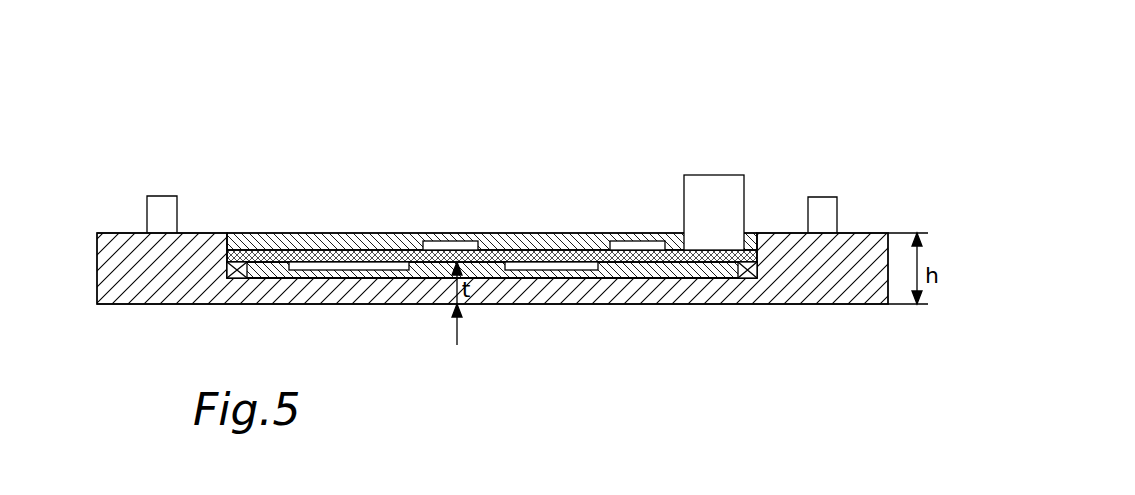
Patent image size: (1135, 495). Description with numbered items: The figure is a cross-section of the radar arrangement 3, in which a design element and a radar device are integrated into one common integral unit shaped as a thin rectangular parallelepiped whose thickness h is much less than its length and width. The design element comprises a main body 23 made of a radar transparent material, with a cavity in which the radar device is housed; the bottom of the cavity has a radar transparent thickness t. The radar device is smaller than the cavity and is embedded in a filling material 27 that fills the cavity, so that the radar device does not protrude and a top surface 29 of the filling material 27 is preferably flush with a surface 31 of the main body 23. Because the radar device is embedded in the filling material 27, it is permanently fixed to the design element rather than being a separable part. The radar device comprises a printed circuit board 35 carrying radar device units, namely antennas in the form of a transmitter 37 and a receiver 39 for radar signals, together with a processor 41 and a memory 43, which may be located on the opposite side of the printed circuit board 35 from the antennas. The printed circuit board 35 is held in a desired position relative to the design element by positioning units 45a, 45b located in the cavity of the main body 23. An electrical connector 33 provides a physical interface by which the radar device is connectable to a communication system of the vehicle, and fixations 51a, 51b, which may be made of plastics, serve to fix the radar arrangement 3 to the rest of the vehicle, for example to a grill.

The radar arrangement 3 is at (808, 90).
The main body 23 is at (123, 265).
The filling material 27 is at (340, 243).
The top surface 29 is at (543, 222).
The surface 31 is at (201, 228).
The electrical connector 33 is at (710, 192).
The printed circuit board 35 is at (627, 258).
The transmitter 37 is at (545, 266).
The receiver 39 is at (335, 267).
The processor 41 is at (635, 242).
The memory 43 is at (447, 245).
The positioning unit 45a is at (738, 277).
The positioning unit 45b is at (225, 270).
The fixation 51a is at (825, 218).
The fixation 51b is at (157, 213).